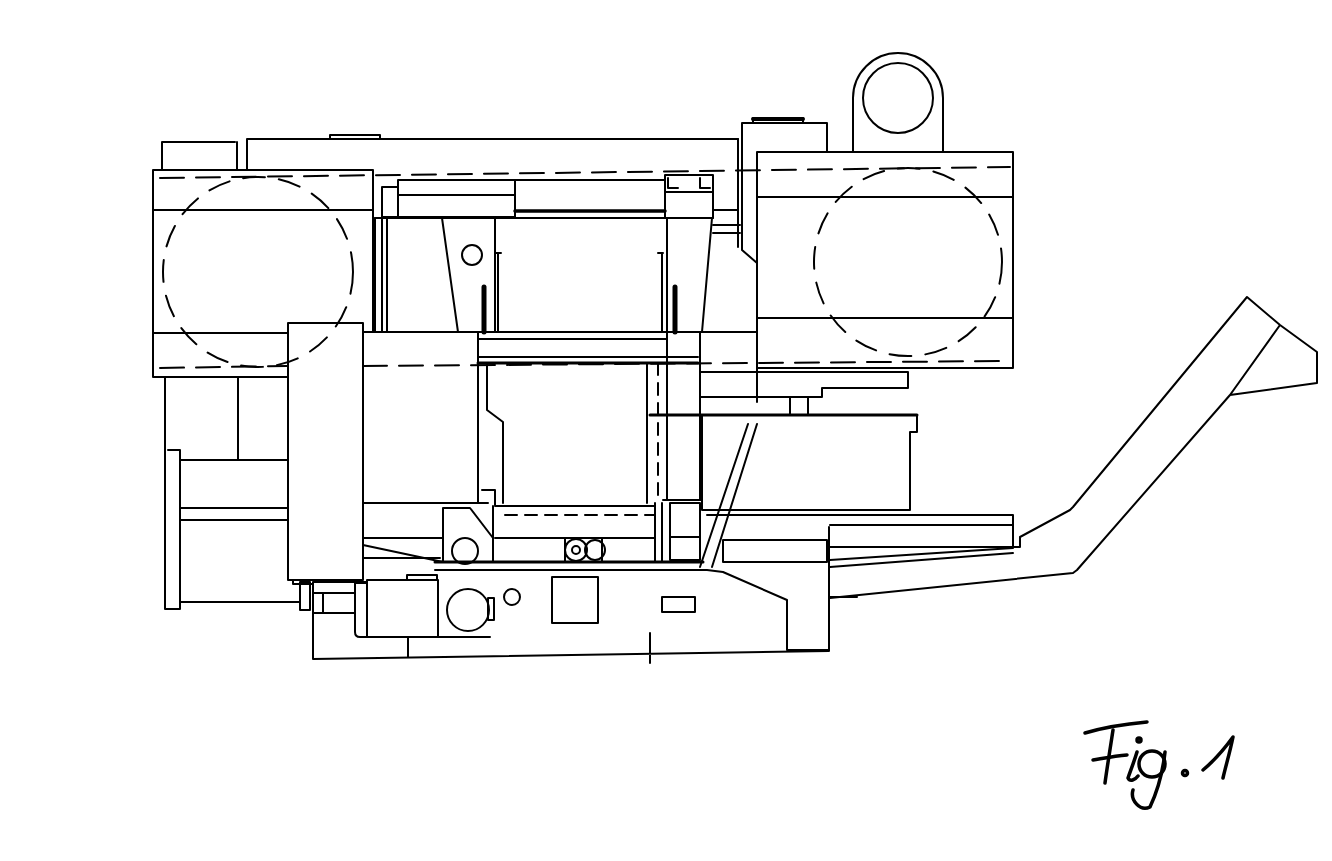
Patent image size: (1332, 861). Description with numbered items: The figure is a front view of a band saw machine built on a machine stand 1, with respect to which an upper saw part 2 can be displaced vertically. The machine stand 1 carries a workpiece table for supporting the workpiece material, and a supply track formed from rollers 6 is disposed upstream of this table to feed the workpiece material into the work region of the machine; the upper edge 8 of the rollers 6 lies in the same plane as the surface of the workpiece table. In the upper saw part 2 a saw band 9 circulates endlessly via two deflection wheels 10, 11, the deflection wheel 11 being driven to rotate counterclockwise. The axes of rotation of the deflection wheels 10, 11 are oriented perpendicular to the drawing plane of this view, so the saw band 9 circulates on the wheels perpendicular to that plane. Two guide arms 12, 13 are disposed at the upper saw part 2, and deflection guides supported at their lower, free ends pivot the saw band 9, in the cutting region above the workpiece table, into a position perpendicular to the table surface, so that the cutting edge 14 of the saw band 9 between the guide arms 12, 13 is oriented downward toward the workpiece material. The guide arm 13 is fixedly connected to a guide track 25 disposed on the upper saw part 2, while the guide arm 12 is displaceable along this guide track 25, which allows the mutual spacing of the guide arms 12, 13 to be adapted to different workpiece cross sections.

The machine stand 1 is at (166, 555).
The upper saw part 2 is at (538, 139).
The rollers 6 is at (524, 522).
The upper edge 8 is at (603, 508).
The saw band 9 is at (610, 172).
The deflection wheel 10 is at (217, 258).
The deflection wheel 11 is at (948, 233).
The guide arm 12 is at (465, 285).
The guide arm 13 is at (683, 263).
The cutting edge 14 is at (563, 360).
The guide track 25 is at (575, 198).